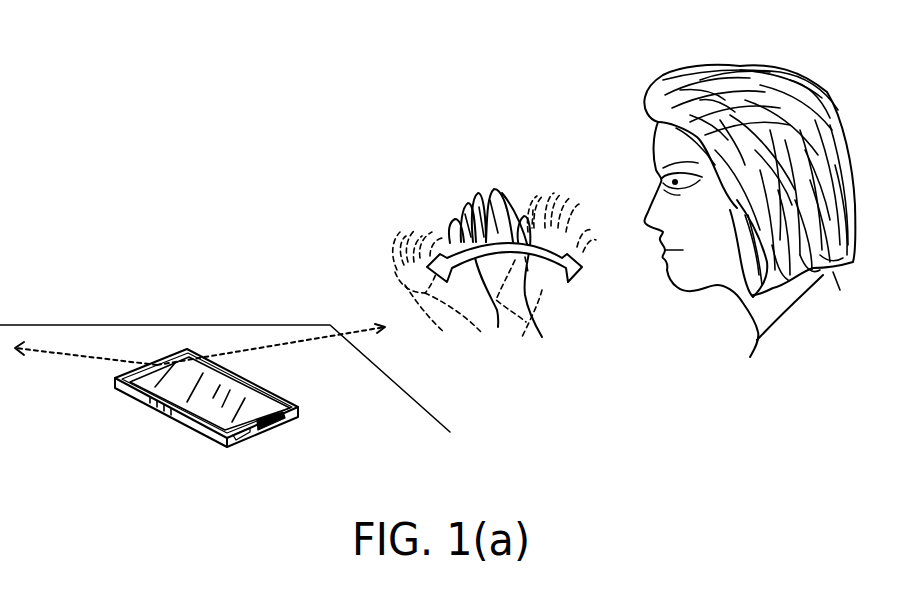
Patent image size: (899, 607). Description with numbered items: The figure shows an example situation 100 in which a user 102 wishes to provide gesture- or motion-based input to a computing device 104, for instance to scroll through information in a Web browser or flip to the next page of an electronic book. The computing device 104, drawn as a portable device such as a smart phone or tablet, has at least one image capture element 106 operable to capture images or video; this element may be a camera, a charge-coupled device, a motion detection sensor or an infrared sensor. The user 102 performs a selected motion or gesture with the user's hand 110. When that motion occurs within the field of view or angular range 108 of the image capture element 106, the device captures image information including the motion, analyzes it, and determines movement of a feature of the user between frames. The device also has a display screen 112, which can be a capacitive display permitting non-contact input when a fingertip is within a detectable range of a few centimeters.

The example situation 100 is at (100, 107).
The user 102 is at (608, 122).
The computing device 104 is at (116, 388).
The image capture element 106 is at (160, 365).
The angular range 108 is at (245, 342).
The user's hand 110 is at (413, 192).
The display screen 112 is at (271, 418).